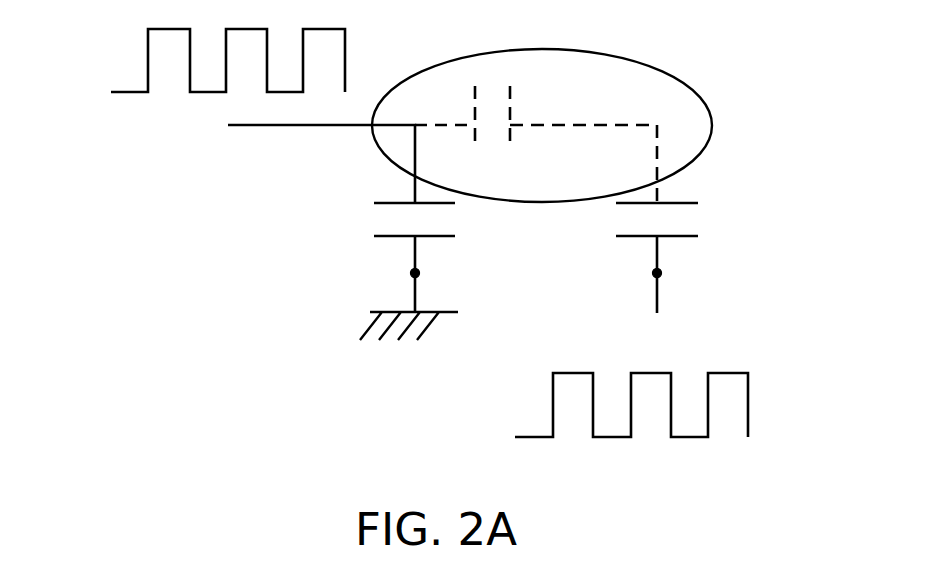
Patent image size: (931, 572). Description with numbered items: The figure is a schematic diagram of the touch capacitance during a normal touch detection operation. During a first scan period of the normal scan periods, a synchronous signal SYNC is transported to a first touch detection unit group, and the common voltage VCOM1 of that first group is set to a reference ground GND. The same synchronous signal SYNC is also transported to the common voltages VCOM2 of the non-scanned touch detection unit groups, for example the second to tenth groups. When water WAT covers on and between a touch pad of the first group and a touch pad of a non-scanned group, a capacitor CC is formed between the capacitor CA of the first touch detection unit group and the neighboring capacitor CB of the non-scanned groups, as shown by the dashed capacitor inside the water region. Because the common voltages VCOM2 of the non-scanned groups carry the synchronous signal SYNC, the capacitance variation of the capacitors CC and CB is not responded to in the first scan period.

The synchronous signal SYNC is at (125, 60).
The water WAT is at (615, 55).
The capacitor CC is at (536, 138).
The capacitor CA is at (394, 256).
The capacitor CB is at (677, 257).
The common voltage VCOM1 is at (420, 272).
The common voltage VCOM2 is at (663, 272).
The reference ground GND is at (409, 351).